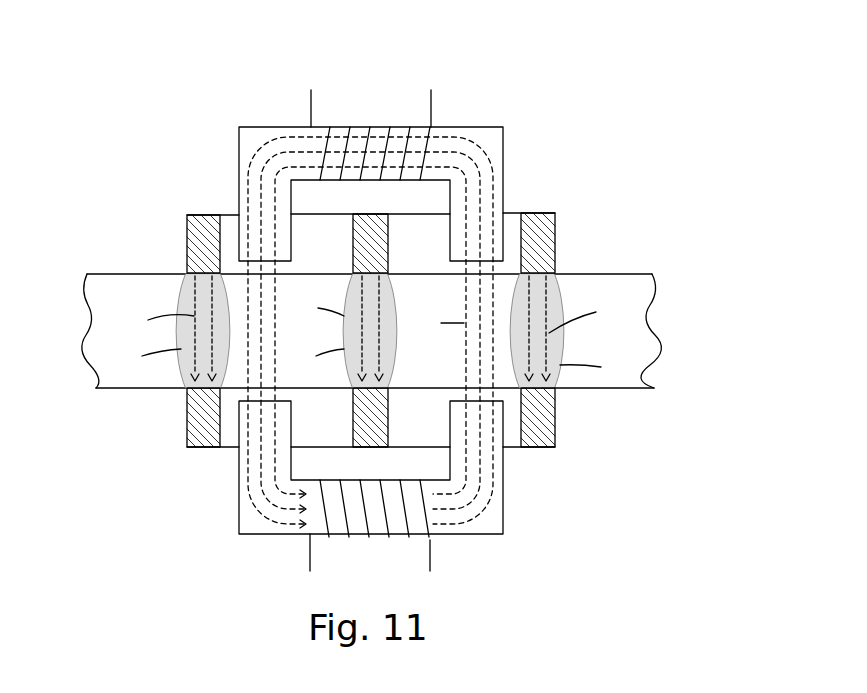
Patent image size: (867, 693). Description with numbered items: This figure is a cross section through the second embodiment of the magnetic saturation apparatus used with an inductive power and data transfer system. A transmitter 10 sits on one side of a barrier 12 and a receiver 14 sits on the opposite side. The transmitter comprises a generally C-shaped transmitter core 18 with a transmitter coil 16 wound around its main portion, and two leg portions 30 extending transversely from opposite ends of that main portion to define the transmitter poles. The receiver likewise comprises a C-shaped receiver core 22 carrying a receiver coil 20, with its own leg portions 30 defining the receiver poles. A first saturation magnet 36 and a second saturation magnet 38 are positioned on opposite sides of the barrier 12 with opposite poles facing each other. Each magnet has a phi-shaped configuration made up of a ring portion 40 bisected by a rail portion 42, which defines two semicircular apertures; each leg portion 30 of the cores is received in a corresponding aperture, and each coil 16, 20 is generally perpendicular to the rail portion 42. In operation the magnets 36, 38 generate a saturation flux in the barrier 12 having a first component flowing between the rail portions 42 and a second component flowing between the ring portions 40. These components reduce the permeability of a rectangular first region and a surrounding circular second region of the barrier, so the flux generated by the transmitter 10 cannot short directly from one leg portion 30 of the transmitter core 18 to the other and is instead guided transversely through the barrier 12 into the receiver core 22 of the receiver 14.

The transmitter 10 is at (514, 107).
The barrier 12 is at (372, 331).
The receiver 14 is at (389, 501).
The transmitter coil 16 is at (353, 118).
The transmitter core 18 is at (258, 126).
The receiver coil 20 is at (392, 540).
The receiver core 22 is at (266, 541).
The leg portions 30 is at (238, 203).
The first saturation magnet 36 is at (557, 222).
The second saturation magnet 38 is at (558, 432).
The ring portion 40 is at (188, 223).
The rail portion 42 is at (352, 233).